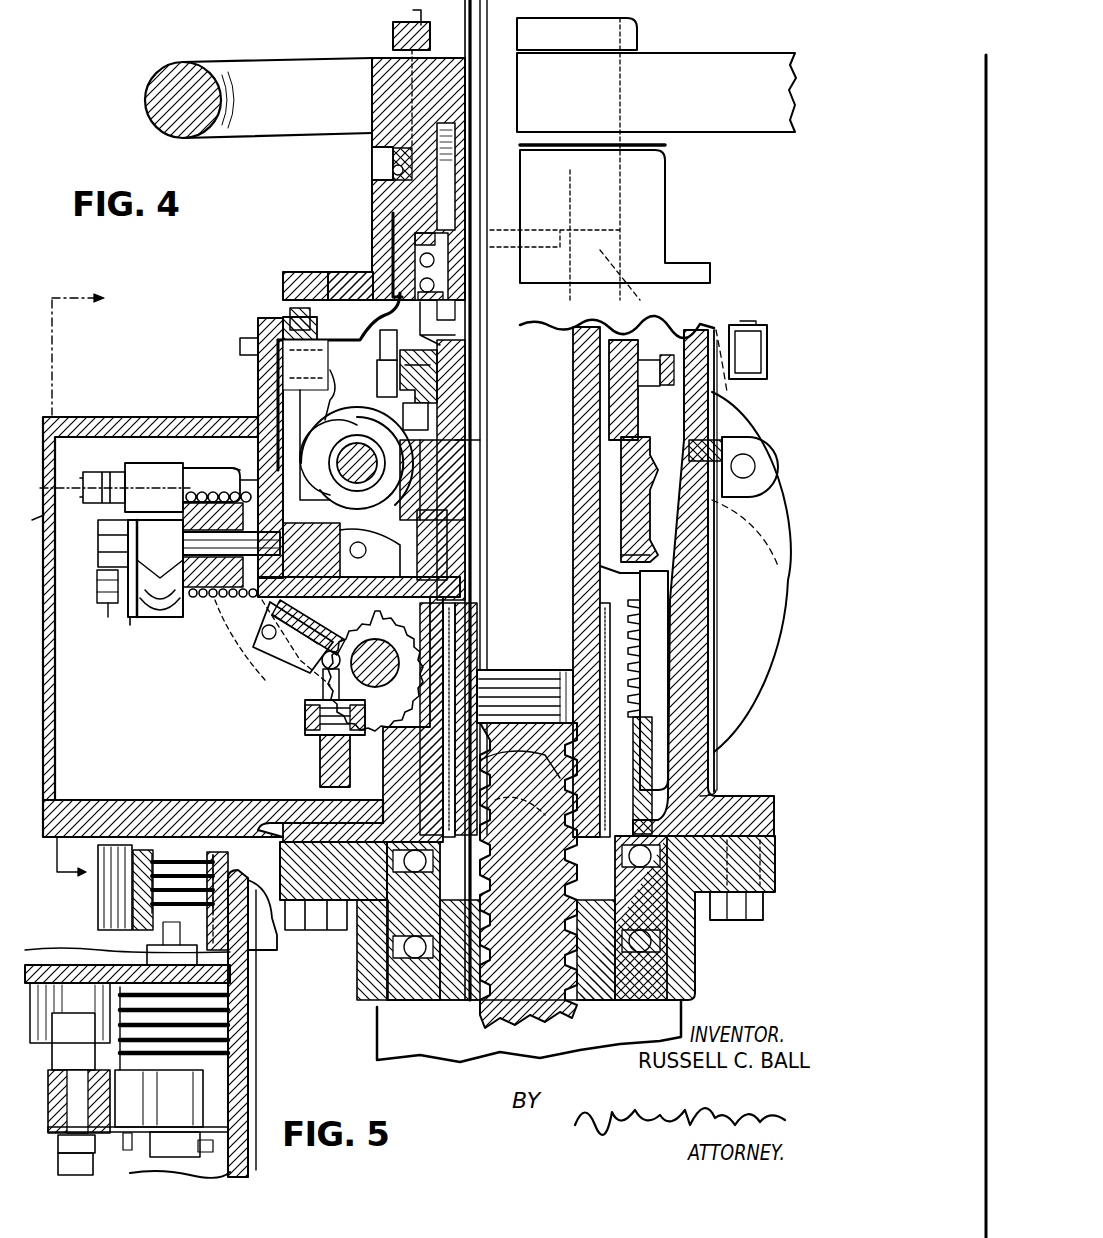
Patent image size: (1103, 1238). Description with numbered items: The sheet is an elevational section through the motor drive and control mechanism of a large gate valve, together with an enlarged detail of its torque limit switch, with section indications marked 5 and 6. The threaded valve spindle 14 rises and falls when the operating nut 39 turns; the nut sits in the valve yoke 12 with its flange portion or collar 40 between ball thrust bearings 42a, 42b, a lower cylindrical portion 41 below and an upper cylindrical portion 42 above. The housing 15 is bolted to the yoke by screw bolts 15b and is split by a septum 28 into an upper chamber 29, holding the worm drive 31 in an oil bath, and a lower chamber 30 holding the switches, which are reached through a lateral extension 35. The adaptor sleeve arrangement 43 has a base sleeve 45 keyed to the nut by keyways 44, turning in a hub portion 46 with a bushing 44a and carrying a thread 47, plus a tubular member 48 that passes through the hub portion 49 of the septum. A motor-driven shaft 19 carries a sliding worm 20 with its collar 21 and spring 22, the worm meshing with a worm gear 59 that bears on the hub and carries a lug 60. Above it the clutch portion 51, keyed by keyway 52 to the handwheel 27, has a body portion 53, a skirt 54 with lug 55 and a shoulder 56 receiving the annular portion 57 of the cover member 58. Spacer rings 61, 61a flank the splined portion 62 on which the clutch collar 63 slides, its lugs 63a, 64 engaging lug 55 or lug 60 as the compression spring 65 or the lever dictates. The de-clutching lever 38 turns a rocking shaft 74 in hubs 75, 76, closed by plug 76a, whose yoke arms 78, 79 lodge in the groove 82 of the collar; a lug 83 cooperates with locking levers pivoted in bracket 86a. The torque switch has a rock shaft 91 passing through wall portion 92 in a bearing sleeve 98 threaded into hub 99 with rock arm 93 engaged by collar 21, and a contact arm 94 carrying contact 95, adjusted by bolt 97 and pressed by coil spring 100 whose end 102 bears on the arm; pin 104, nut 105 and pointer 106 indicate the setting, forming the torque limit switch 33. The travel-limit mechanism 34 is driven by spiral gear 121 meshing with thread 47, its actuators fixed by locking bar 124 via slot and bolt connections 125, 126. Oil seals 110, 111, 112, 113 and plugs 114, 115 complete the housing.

In FIG. 4, the section line / cam plate 5 is at (356, 447).
In FIG. 4, the section line 6 is at (75, 588).
In FIG. 4, the yoke 12 is at (378, 1012).
In FIG. 4, the threaded reciprocating valve stem or spindle 14 is at (492, 1006).
In FIG. 4, the casing or housing 15 is at (690, 566).
In FIG. 4, the screw bolts 15b is at (738, 920).
In FIG. 4, the shaft 19 is at (315, 430).
In FIG. 5, the worm 20 is at (100, 887).
In FIG. 5, the collar 21 is at (165, 862).
In FIG. 5, the spring 22 is at (208, 868).
In FIG. 4, the handwheel 27 is at (275, 90).
In FIG. 4, the partition or septum 28 is at (648, 572).
In FIG. 4, the upper chamber 29 is at (648, 499).
In FIG. 4, the lower chamber 30 is at (662, 642).
In FIG. 4, the worm drive 31 is at (285, 372).
In FIG. 4, the torque limit switch 33 is at (112, 560).
In FIG. 4, the timed distance or travel-limit switch mechanism 34 is at (320, 755).
In FIG. 4, the lateral extension 35 is at (85, 800).
In FIG. 4, the de-clutching lever 38 is at (752, 330).
In FIG. 4, the operating nut 39 is at (606, 900).
In FIG. 4, the flange portion or collar 40 is at (420, 905).
In FIG. 4, the lower cylindrical portion 41 is at (395, 990).
In FIG. 4, the upper cylindrical portion 42 is at (660, 790).
In FIG. 4, the ball thrust bearing 42a is at (378, 960).
In FIG. 4, the ball thrust bearing 42b is at (395, 890).
In FIG. 4, the adaptor sleeve arrangement 43 is at (470, 672).
In FIG. 4, the keyways 44 is at (604, 616).
In FIG. 4, the bushing 44a is at (690, 810).
In FIG. 4, the base sleeve 45 is at (640, 720).
In FIG. 4, the hub portion 46 is at (398, 745).
In FIG. 4, the thread 47 is at (638, 628).
In FIG. 4, the tubular member 48 is at (440, 470).
In FIG. 4, the hub portion 49 is at (618, 530).
In FIG. 4, the clutch portion 51 is at (450, 135).
In FIG. 4, the keyway 52 is at (392, 100).
In FIG. 4, the upper cylindrical body portion 53 is at (440, 212).
In FIG. 4, the skirt 54 is at (432, 263).
In FIG. 4, the lug 55 is at (444, 310).
In FIG. 4, the shoulder 56 is at (434, 225).
In FIG. 4, the annular portion 57 is at (448, 185).
In FIG. 4, the cover member 58 is at (380, 228).
In FIG. 4, the worm gear 59 is at (430, 500).
In FIG. 4, the lug 60 is at (410, 435).
In FIG. 4, the ring or spacer 61 is at (393, 216).
In FIG. 4, the ring 61a is at (470, 440).
In FIG. 4, the splined portion 62 is at (423, 386).
In FIG. 4, the clutch collar 63 is at (420, 393).
In FIG. 4, the lug 63a is at (448, 340).
In FIG. 4, the lug 64 is at (430, 410).
In FIG. 4, the compression spring 65 is at (445, 283).
In FIG. 4, the horizontal rocking shaft 74 is at (715, 340).
In FIG. 4, the hub 75 is at (712, 290).
In FIG. 4, the hub 76 is at (268, 335).
In FIG. 4, the plug 76a is at (256, 348).
In FIG. 4, the arm 78 is at (672, 386).
In FIG. 4, the arm 79 is at (365, 270).
In FIG. 4, the circular groove 82 is at (660, 300).
In FIG. 4, the lug 83 is at (318, 302).
In FIG. 4, the bracket 86a is at (365, 545).
In FIG. 4, the rock shaft 91 is at (182, 600).
In FIG. 4, the vertical portion 92 is at (245, 470).
In FIG. 4, the rock arm or lever 93 is at (205, 470).
In FIG. 4, the rock arm 94 is at (118, 465).
In FIG. 4, the electric contact maker and breaker 95 is at (160, 465).
In FIG. 4, the bolt 97 is at (130, 612).
In FIG. 4, the flanged bearing sleeve 98 is at (170, 615).
In FIG. 4, the hub 99 is at (215, 600).
In FIG. 4, the coil spring 100 is at (215, 590).
In FIG. 5, the end 102 is at (117, 1132).
In FIG. 4, the pin 104 is at (102, 578).
In FIG. 4, the nut 105 is at (108, 540).
In FIG. 4, the pointer 106 is at (102, 598).
In FIG. 4, the oil seal 110 is at (612, 566).
In FIG. 4, the oil seal 111 is at (280, 590).
In FIG. 4, the oil seal 112 is at (372, 166).
In FIG. 4, the oil seal 113 is at (412, 14).
In FIG. 4, the plug 114 is at (296, 305).
In FIG. 4, the plug 115 is at (722, 450).
In FIG. 4, the spiral gear 121 is at (290, 712).
In FIG. 4, the removable locking bar 124 is at (300, 670).
In FIG. 4, the slot and bolt connection 125 is at (296, 670).
In FIG. 4, the slot and bolt connection 126 is at (255, 647).